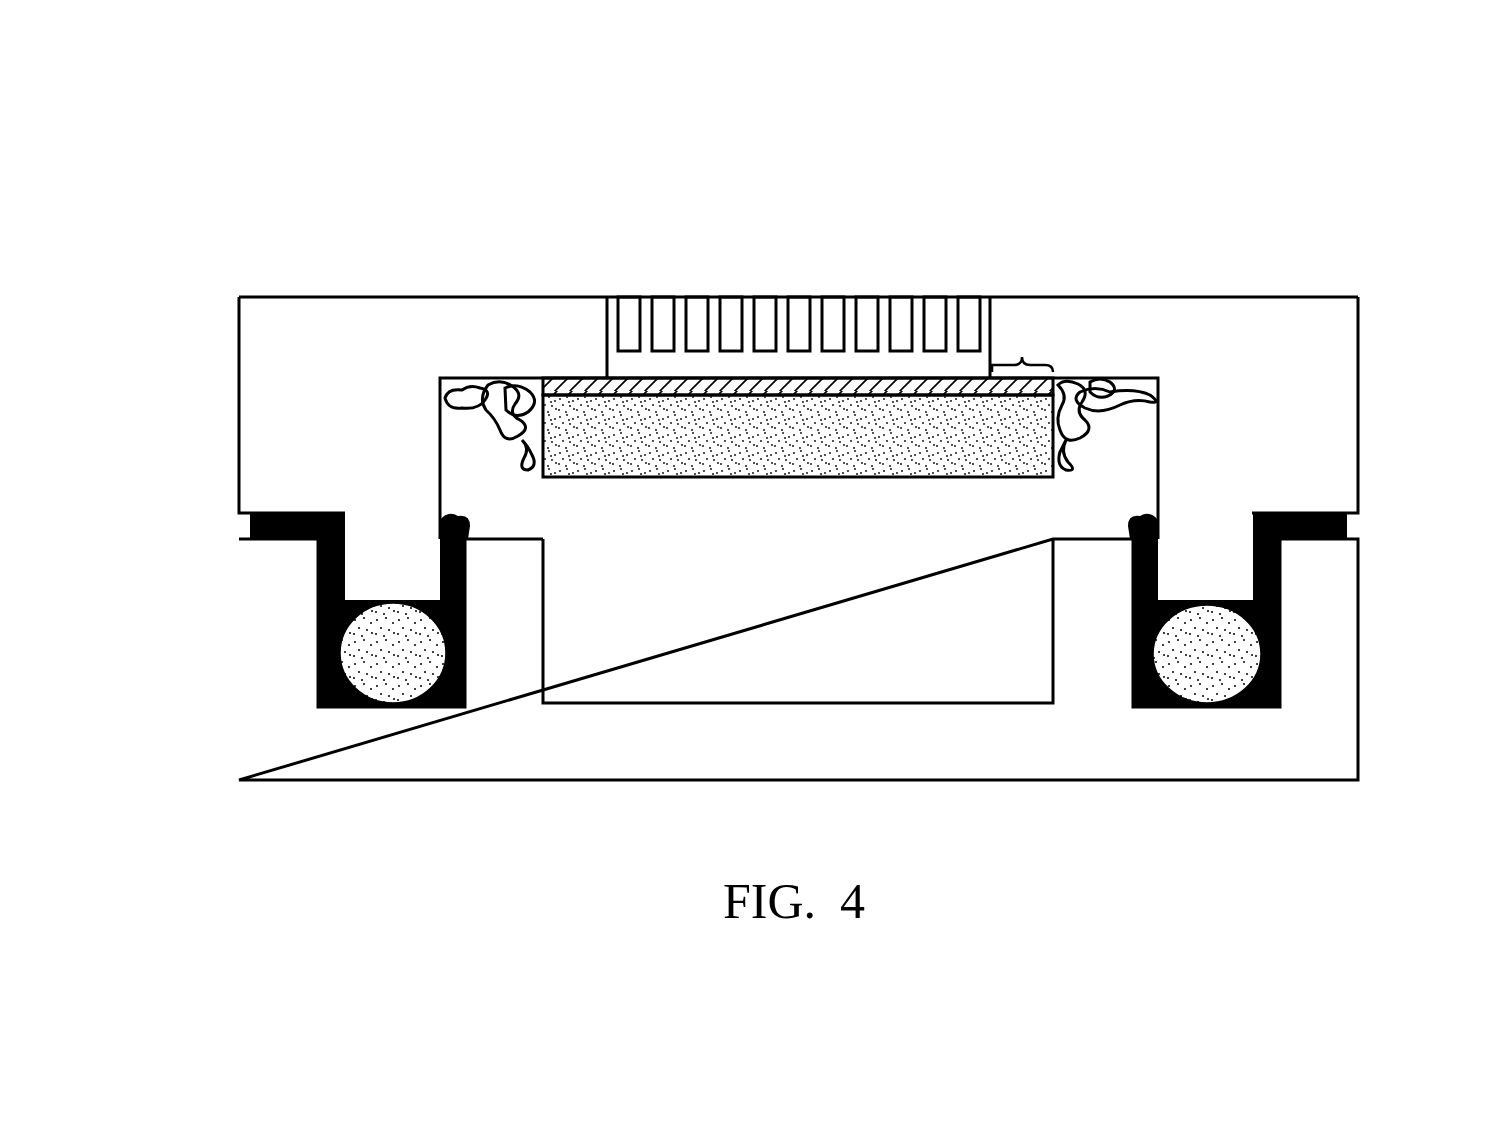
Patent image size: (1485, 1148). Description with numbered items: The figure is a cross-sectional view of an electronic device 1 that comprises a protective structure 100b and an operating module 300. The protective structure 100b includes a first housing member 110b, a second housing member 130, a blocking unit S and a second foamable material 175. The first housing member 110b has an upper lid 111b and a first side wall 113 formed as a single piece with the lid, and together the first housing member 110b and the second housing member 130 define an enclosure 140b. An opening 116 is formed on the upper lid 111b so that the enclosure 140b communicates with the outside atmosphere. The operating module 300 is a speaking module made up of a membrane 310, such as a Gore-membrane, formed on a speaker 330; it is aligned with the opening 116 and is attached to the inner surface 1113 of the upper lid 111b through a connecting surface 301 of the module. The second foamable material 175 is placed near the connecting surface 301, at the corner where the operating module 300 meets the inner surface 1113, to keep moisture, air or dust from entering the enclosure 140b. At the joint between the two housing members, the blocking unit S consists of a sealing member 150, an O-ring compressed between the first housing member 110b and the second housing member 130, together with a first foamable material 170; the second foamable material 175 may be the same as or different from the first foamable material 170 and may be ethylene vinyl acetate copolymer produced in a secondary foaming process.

The electronic device 1 is at (222, 122).
The protective structure 100b is at (217, 264).
The first housing member 110b is at (239, 445).
The upper lid 111b is at (1348, 339).
The first side wall 113 is at (1348, 445).
The opening 116 is at (903, 305).
The inner surface 1113 is at (1160, 392).
The second housing member 130 is at (239, 703).
The enclosure 140b is at (763, 623).
The sealing member 150 is at (363, 647).
The first foamable material 170 is at (252, 530).
The second foamable material 175 is at (499, 392).
The blocking unit S is at (147, 503).
The operating module 300 is at (597, 213).
The membrane 310 is at (631, 393).
The speaker 330 is at (735, 420).
The connecting surface 301 is at (1022, 357).